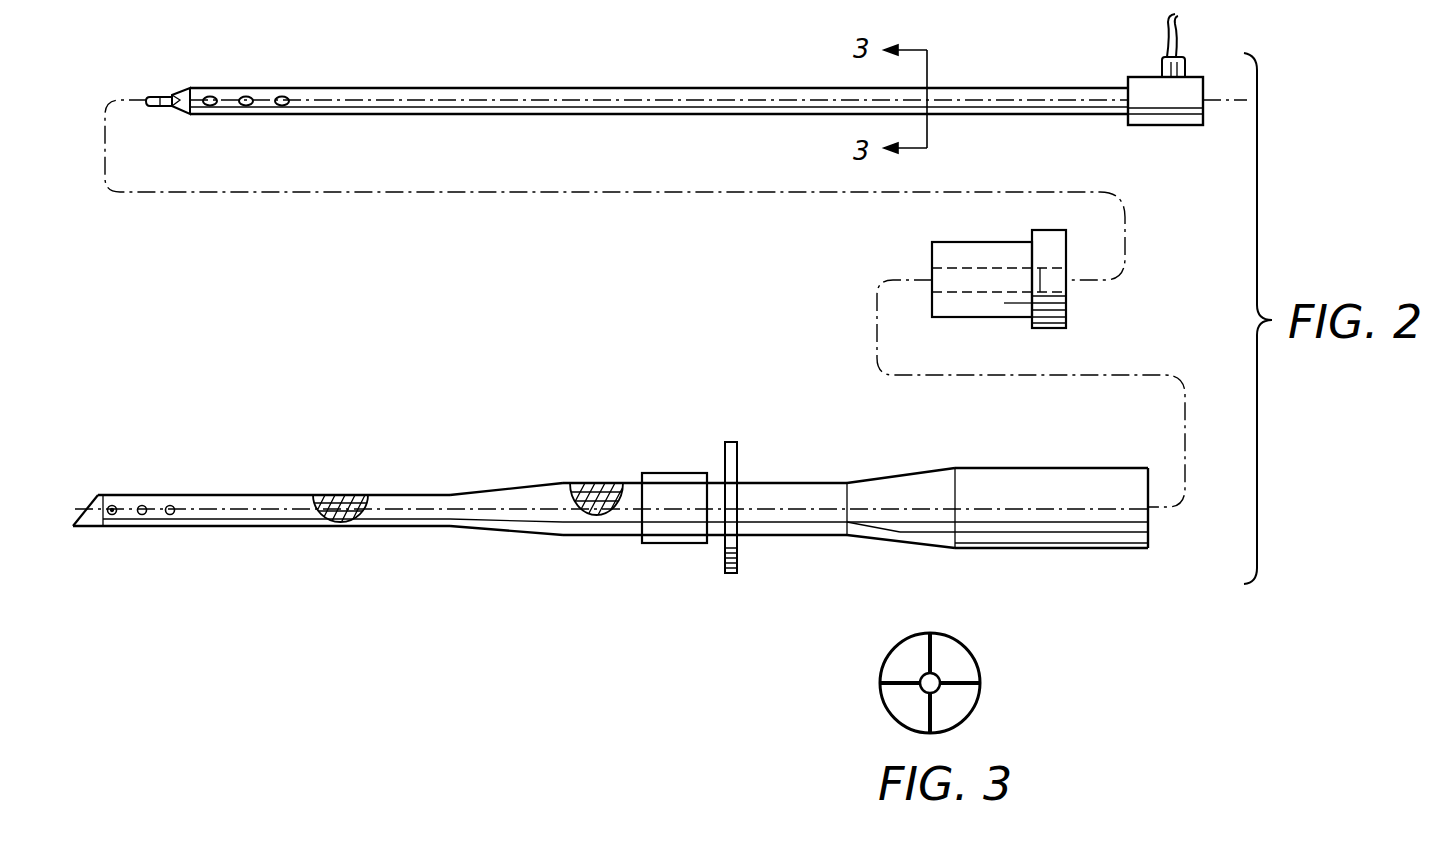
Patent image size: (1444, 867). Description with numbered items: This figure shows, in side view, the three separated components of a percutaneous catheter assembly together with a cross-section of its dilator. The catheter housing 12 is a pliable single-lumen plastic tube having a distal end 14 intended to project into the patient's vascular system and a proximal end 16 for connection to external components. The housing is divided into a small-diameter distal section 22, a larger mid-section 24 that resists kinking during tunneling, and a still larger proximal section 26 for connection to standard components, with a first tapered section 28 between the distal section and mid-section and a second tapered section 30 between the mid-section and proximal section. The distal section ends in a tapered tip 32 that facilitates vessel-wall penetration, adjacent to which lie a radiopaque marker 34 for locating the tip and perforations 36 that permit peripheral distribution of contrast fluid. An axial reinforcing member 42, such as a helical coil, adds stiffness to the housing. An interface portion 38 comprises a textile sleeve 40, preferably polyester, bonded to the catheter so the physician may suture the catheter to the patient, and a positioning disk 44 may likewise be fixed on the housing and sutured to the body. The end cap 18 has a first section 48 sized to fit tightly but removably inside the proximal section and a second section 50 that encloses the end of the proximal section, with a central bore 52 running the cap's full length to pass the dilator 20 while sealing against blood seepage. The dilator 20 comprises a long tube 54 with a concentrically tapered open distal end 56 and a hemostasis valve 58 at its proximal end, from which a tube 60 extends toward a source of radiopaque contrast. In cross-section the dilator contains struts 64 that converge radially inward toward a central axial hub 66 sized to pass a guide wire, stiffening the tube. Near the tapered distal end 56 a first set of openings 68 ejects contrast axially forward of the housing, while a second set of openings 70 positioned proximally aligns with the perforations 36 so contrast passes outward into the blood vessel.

In FIG. 2, the catheter housing 12 is at (621, 538).
In FIG. 2, the distal end 14 is at (132, 527).
In FIG. 2, the proximal end 16 is at (1124, 548).
In FIG. 2, the end cap 18 is at (1012, 242).
In FIG. 2, the dilator 20 is at (592, 88).
In FIG. 2, the distal section 22 is at (200, 495).
In FIG. 2, the mid-section 24 is at (590, 483).
In FIG. 2, the proximal section 26 is at (1065, 513).
In FIG. 2, the first tapered section 28 is at (533, 483).
In FIG. 2, the second tapered section 30 is at (907, 468).
In FIG. 2, the tip 32 is at (88, 496).
In FIG. 2, the radiopaque marker 34 is at (103, 528).
In FIG. 2, the perforations 36 is at (142, 505).
In FIG. 2, the interface portion 38 is at (682, 438).
In FIG. 2, the sleeve 40 is at (675, 545).
In FIG. 2, the axial reinforcing member 42 is at (330, 525).
In FIG. 2, the positioning disk 44 is at (730, 575).
In FIG. 2, the first section 48 is at (985, 320).
In FIG. 2, the second section 50 is at (1068, 310).
In FIG. 2, the central bore 52 is at (1045, 268).
In FIG. 2, the tube 54 is at (683, 88).
In FIG. 3, the tube 54 is at (900, 655).
In FIG. 2, the distal end 56 is at (180, 92).
In FIG. 2, the hemostasis valve 58 is at (1163, 125).
In FIG. 2, the tube 60 is at (1165, 45).
In FIG. 3, the struts 64 is at (960, 690).
In FIG. 3, the central axial hub 66 is at (940, 678).
In FIG. 2, the openings 68 is at (180, 108).
In FIG. 2, the openings 70 is at (297, 80).